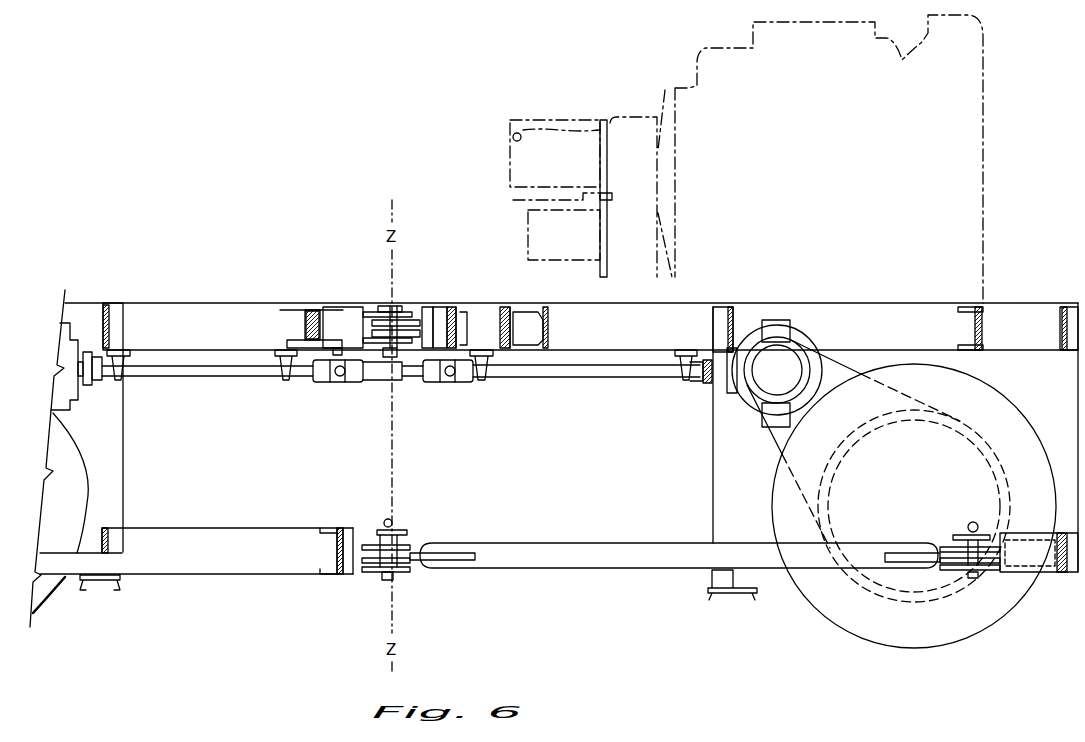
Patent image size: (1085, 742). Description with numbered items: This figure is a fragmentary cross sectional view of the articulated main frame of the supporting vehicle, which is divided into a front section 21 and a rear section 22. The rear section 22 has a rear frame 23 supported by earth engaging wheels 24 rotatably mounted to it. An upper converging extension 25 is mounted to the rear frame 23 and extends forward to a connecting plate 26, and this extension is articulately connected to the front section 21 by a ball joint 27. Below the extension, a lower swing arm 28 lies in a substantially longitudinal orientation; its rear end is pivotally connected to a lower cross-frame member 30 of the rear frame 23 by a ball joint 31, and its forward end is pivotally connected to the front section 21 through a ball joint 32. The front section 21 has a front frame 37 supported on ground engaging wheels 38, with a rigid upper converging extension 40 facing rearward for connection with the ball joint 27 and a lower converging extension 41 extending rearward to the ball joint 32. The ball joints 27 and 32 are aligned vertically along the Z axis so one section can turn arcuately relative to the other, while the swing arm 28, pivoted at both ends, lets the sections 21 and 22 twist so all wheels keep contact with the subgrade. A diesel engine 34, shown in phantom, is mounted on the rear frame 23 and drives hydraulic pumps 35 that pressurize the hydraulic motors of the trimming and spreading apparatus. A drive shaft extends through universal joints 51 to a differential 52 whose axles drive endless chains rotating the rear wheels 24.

The front section 21 is at (146, 406).
The rear section 22 is at (697, 471).
The rear frame 23 is at (984, 327).
The wheels 24 is at (978, 413).
The upper converging extension 25 is at (510, 305).
The connecting plate 26 is at (425, 305).
The ball joint 27 is at (407, 298).
The lower swing arm 28 is at (598, 563).
The lower cross-frame member 30 is at (1003, 552).
The ball joint 31 is at (990, 580).
The ball joint 32 is at (419, 581).
The diesel engine 34 is at (986, 160).
The hydraulic pumps 35 is at (561, 198).
The front frame 37 is at (105, 303).
The wheels 38 is at (80, 508).
The rigid upper converging extension 40 is at (296, 303).
The lower converging extension 41 is at (330, 576).
The universal joints 51 is at (313, 393).
The differential 52 is at (812, 342).